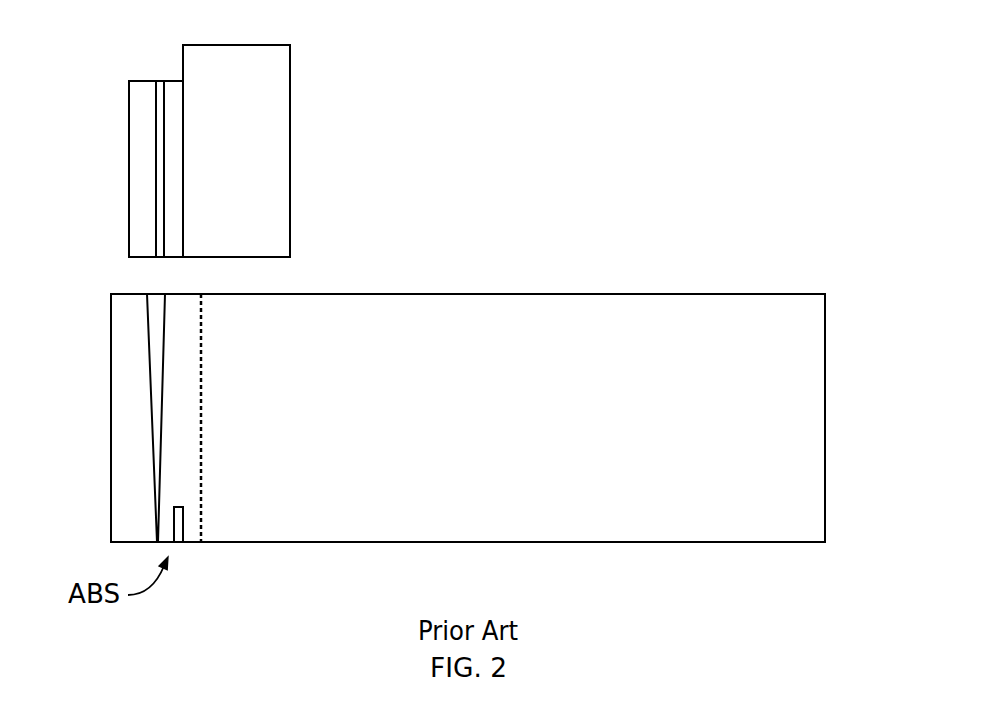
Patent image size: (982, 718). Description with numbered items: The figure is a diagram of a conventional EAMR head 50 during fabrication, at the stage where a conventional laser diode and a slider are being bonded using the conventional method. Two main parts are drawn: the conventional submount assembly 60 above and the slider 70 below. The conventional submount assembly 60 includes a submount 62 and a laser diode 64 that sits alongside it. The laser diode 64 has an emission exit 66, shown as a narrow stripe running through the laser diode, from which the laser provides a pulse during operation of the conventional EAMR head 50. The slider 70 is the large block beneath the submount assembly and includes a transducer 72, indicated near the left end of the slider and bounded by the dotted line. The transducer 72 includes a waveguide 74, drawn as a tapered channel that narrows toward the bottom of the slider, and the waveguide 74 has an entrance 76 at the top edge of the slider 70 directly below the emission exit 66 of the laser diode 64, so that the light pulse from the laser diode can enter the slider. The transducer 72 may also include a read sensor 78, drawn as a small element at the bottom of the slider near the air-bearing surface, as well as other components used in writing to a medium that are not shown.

The conventional EAMR head 50 is at (483, 38).
The conventional submount assembly 60 is at (256, 151).
The submount 62 is at (291, 150).
The laser diode 64 is at (129, 110).
The emission exit 66 is at (166, 246).
The slider 70 is at (825, 382).
The transducer 72 is at (92, 404).
The waveguide 74 is at (152, 470).
The entrance 76 is at (150, 286).
The read sensor 78 is at (179, 542).